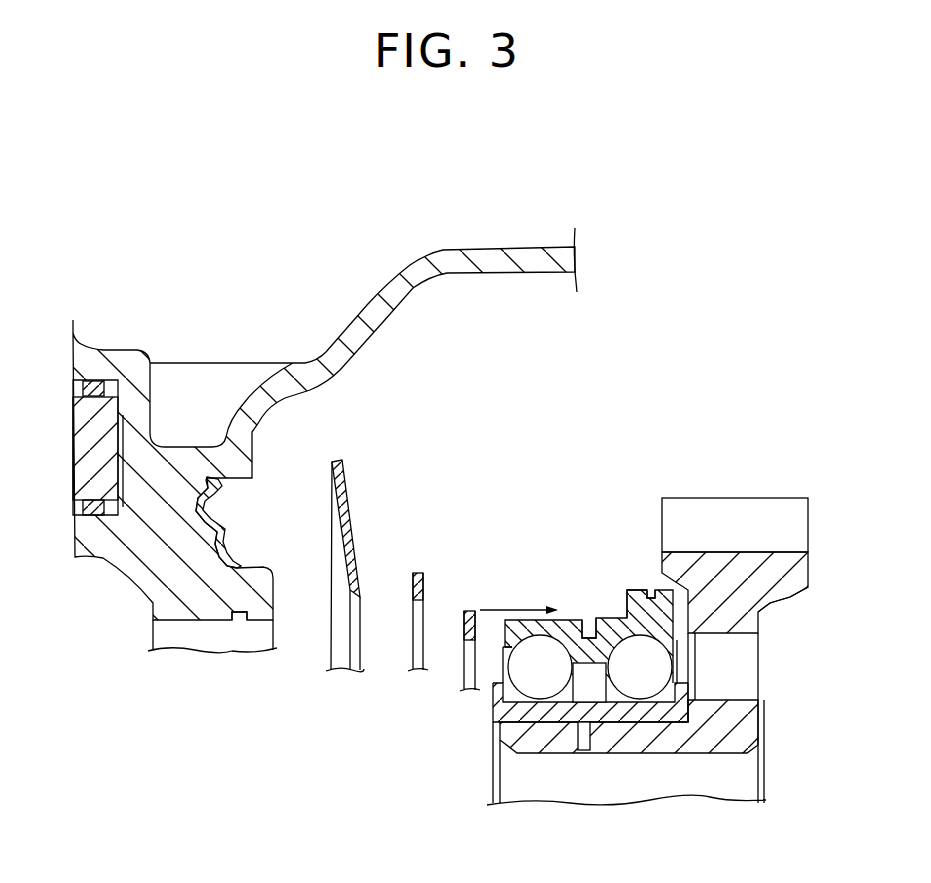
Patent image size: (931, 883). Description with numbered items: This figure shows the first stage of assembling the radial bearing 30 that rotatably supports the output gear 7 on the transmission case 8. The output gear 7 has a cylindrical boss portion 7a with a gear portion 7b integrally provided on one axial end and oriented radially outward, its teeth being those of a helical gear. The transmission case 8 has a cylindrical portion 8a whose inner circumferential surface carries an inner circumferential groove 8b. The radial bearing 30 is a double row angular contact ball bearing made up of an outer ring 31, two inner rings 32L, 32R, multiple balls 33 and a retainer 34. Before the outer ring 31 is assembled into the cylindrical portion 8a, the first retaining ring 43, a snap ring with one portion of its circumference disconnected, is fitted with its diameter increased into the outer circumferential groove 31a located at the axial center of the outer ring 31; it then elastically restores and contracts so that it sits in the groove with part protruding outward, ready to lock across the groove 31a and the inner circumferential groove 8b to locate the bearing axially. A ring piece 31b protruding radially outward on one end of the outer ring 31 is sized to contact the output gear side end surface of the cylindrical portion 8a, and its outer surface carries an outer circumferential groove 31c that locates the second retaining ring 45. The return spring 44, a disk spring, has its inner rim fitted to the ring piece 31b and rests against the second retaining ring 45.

The output gear 7 is at (665, 636).
The cylindrical boss portion 7a is at (692, 740).
The gear portion 7b is at (778, 588).
The transmission case 8 is at (120, 348).
The cylindrical portion 8a is at (187, 612).
The inner circumferential groove 8b is at (238, 612).
The radial bearing 30 is at (566, 638).
The outer ring 31 is at (592, 568).
The outer circumferential groove 31a is at (588, 627).
The ring piece 31b is at (628, 590).
The outer circumferential groove 31c is at (651, 590).
The inner ring 32L is at (557, 713).
The inner ring 32R is at (624, 713).
The balls 33 is at (618, 700).
The retainer 34 is at (503, 655).
The first retaining ring 43 is at (468, 610).
The return spring 44 is at (343, 465).
The second retaining ring 45 is at (416, 573).